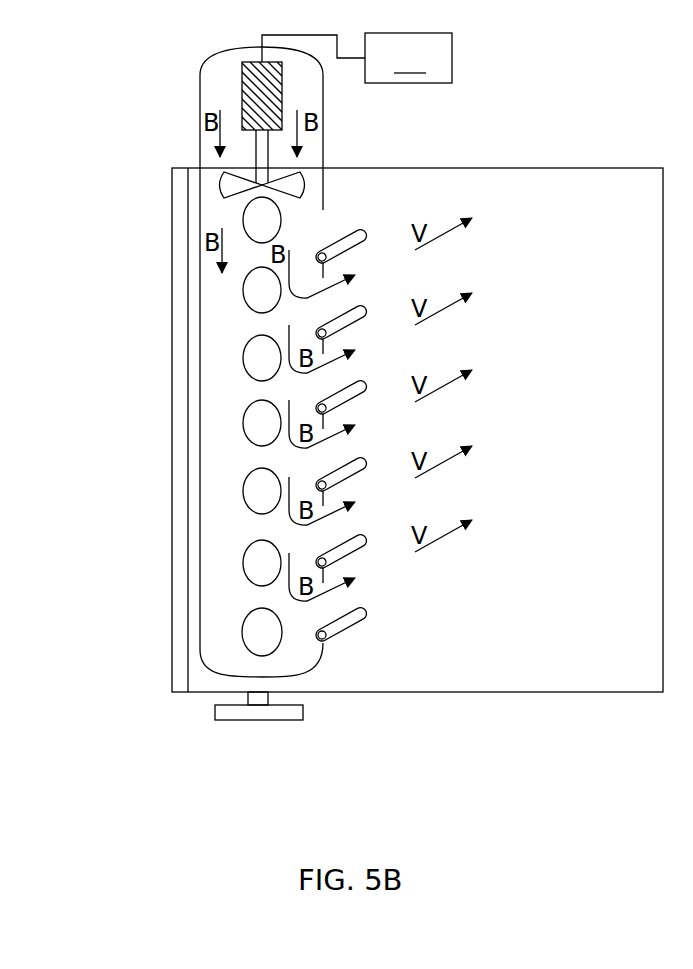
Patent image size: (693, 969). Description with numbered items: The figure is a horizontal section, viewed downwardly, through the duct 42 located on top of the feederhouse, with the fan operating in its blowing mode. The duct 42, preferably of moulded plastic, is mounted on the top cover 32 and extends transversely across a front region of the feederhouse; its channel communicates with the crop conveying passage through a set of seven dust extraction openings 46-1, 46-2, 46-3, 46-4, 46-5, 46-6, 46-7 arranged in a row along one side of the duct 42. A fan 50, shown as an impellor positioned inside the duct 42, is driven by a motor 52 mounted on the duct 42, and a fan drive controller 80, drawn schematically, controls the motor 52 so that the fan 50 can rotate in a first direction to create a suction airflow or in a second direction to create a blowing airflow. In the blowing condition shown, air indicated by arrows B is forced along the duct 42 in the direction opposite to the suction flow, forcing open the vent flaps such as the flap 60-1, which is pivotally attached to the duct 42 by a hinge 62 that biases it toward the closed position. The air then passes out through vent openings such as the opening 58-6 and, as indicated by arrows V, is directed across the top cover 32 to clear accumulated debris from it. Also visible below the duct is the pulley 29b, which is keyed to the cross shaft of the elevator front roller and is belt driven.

The top cover 32 is at (589, 430).
The duct 42 is at (200, 146).
The fan drive controller 80 is at (357, 58).
The motor 52 is at (243, 82).
The fan 50 is at (311, 183).
The vent opening 58-6 is at (367, 239).
The flap 60-1 is at (361, 628).
The hinge 62 is at (326, 641).
The pulley 29b is at (303, 719).
The dust extraction opening 46-1 is at (242, 630).
The dust extraction opening 46-2 is at (243, 561).
The dust extraction opening 46-3 is at (243, 489).
The dust extraction opening 46-4 is at (243, 421).
The dust extraction opening 46-5 is at (243, 356).
The dust extraction opening 46-6 is at (243, 288).
The dust extraction opening 46-7 is at (243, 218).